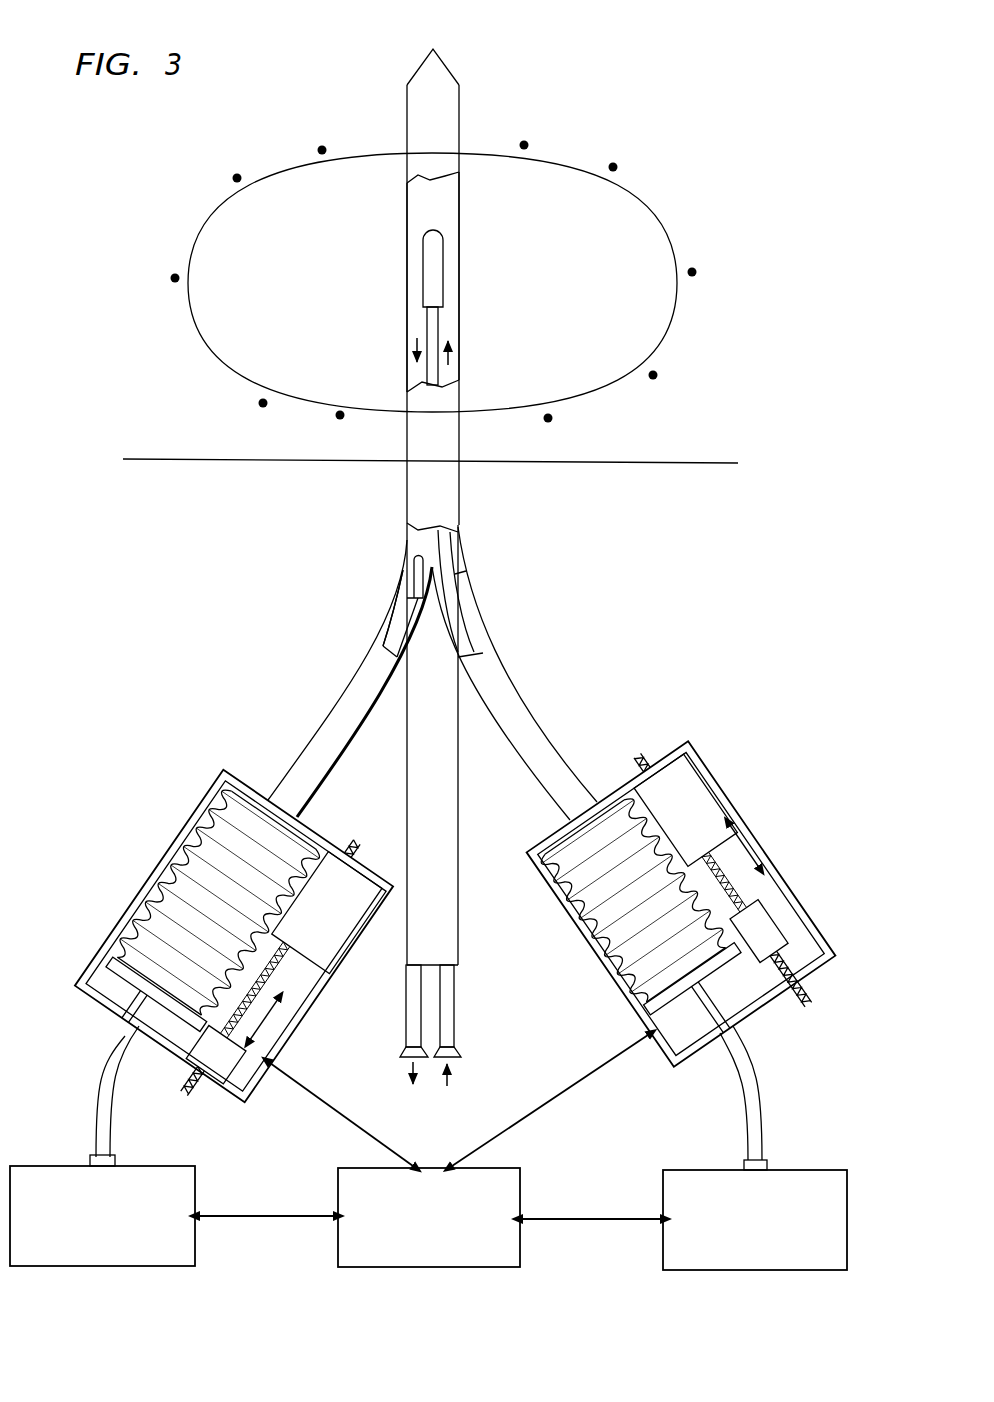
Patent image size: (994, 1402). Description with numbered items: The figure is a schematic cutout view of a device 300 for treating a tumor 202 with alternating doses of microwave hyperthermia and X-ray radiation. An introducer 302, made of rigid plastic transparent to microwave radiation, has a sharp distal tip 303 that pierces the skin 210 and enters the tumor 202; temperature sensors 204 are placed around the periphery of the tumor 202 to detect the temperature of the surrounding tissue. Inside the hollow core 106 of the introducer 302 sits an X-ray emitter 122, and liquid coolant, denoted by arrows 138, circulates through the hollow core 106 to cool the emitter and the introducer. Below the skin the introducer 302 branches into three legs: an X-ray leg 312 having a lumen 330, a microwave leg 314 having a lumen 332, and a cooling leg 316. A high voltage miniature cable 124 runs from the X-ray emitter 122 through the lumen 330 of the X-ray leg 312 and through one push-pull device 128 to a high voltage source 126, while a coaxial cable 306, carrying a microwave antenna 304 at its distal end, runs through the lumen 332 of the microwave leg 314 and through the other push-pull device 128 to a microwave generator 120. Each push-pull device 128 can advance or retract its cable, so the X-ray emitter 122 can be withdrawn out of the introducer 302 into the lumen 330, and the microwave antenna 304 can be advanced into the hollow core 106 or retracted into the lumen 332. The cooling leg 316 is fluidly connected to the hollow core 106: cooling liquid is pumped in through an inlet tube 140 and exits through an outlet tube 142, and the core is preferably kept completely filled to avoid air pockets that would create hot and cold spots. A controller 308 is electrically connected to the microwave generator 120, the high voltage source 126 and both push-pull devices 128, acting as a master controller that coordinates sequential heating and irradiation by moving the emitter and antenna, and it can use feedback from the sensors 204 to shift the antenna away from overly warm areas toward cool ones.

The device 300 is at (797, 247).
The introducer 302 is at (462, 88).
The sharp distal tip 303 is at (444, 58).
The temperature sensors 204 is at (237, 178).
The tumor 202 is at (659, 255).
The hollow core 106 is at (448, 210).
The X-ray emitter 122 is at (444, 250).
The liquid coolant 138 is at (455, 354).
The skin 210 is at (610, 463).
The microwave antenna 304 is at (410, 578).
The lumen 332 is at (392, 611).
The coaxial cable 306 is at (384, 645).
The high voltage miniature cable 124 is at (465, 580).
The lumen 330 is at (478, 624).
The microwave leg 314 is at (334, 708).
The X-ray leg 312 is at (531, 704).
The cooling leg 316 is at (460, 820).
The push-pull devices 128 is at (133, 915).
The outlet tube 142 is at (405, 1014).
The inlet tube 140 is at (458, 1014).
The microwave generator 120 is at (161, 1165).
The high voltage source 126 is at (697, 1168).
The controller 308 is at (523, 1186).